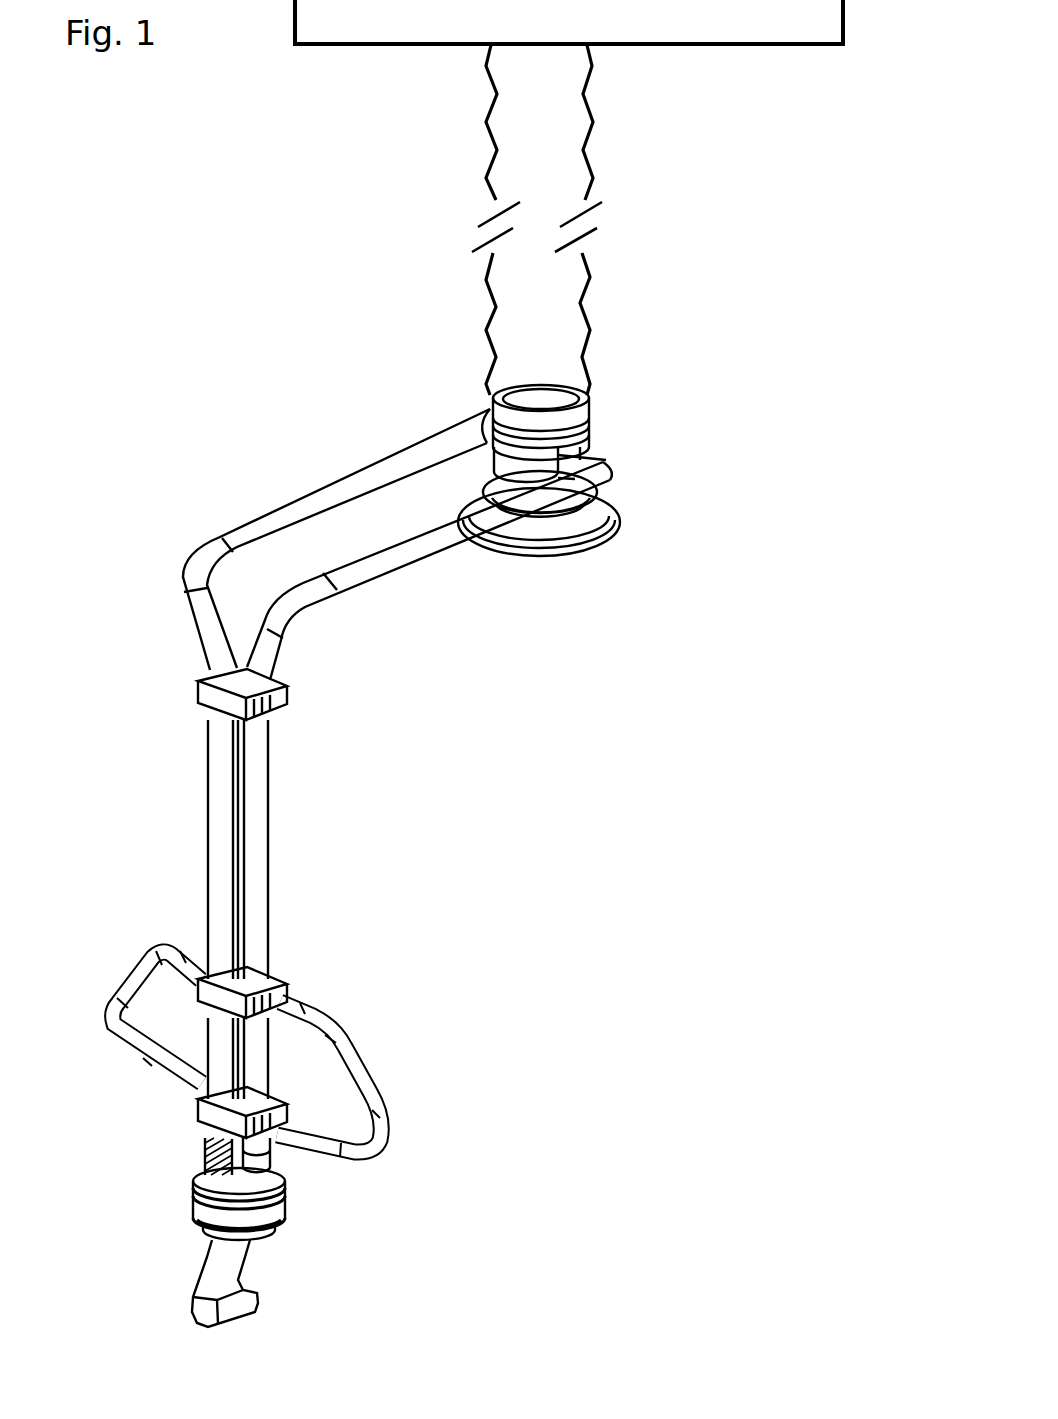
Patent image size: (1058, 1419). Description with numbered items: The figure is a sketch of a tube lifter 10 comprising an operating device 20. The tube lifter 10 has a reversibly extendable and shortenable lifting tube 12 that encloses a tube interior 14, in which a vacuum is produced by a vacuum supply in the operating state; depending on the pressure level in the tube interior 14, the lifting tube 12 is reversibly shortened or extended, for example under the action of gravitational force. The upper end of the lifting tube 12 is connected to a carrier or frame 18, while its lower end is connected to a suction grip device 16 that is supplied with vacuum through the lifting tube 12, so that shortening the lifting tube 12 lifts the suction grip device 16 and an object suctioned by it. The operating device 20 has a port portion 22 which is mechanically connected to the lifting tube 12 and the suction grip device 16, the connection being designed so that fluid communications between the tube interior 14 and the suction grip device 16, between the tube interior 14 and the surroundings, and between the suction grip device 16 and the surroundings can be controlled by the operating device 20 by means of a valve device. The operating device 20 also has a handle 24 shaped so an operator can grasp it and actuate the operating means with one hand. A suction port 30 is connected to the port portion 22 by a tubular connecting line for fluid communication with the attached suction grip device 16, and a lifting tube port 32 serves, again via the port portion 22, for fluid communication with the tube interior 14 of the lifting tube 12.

The tube lifter 10 is at (170, 292).
The lifting tube 12 is at (589, 320).
The tube interior 14 is at (517, 108).
The suction grip device 16 is at (623, 535).
The carrier or frame 18 is at (813, 25).
The operating device 20 is at (332, 1263).
The port portion 22 is at (597, 416).
The handle 24 is at (222, 1258).
The suction port 30 is at (260, 1148).
The lifting tube port 32 is at (210, 1128).